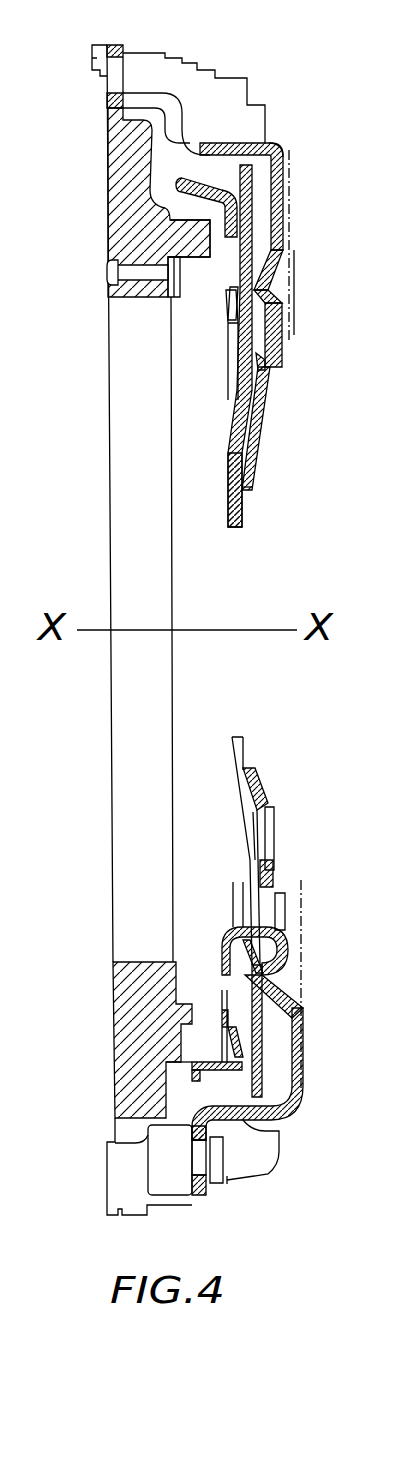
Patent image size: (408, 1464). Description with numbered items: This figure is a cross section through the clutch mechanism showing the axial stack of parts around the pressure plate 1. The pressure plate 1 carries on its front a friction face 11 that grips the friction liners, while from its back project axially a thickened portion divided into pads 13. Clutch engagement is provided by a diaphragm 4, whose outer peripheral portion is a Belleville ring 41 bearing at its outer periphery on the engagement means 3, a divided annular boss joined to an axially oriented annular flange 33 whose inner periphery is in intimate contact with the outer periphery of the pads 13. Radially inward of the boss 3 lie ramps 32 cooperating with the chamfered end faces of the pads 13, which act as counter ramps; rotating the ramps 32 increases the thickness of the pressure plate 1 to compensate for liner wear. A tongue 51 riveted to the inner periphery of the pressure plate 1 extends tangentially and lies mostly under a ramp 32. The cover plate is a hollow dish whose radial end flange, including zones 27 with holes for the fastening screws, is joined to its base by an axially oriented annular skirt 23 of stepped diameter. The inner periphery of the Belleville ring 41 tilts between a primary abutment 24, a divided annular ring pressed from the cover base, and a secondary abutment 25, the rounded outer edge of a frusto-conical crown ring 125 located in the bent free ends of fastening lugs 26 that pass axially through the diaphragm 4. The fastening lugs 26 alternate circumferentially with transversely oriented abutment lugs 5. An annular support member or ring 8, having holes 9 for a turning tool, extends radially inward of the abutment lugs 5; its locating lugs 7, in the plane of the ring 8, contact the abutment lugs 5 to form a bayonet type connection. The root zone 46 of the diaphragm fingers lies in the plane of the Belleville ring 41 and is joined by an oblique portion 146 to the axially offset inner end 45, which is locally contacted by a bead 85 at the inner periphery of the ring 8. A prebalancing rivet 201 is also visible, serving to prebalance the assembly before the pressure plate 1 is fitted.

The pressure plate 1 is at (108, 1002).
The fastening zones of the cover plate flange 27 is at (123, 47).
The annular skirt 23 is at (230, 140).
The Belleville ring portion 41 is at (272, 163).
The engagement means (divided annular boss) 3 is at (232, 219).
The pads 13 is at (125, 240).
The ramps 32 is at (238, 244).
The root zone of the fingers 46 is at (242, 313).
The tongue 51 is at (168, 338).
The abutment lugs 5 is at (292, 357).
The locating lugs 7 is at (268, 385).
The secondary abutment 25 is at (228, 305).
The frusto-conical crown ring 125 is at (237, 290).
The support member (ring) 8 is at (262, 437).
The oblique portion 146 is at (235, 422).
The bead 85 is at (252, 490).
The inner end of the fingers 45 is at (242, 507).
The tool engaging means (holes) 9 is at (272, 830).
The fastening lugs 26 is at (288, 948).
The primary abutment 24 is at (271, 973).
The diaphragm 4 is at (279, 1030).
The annular flange 33 is at (220, 1068).
The friction face 11 is at (113, 1080).
The prebalancing rivet 201 is at (170, 1172).